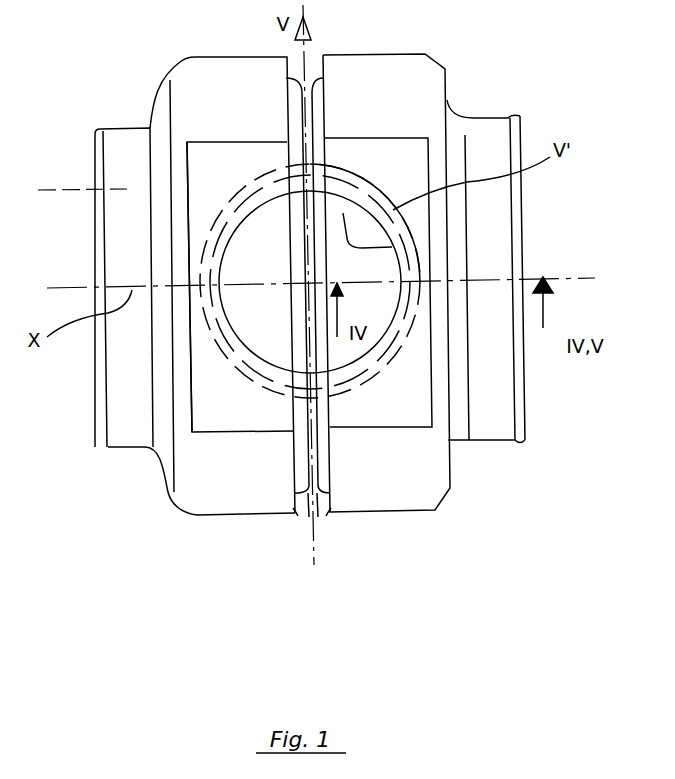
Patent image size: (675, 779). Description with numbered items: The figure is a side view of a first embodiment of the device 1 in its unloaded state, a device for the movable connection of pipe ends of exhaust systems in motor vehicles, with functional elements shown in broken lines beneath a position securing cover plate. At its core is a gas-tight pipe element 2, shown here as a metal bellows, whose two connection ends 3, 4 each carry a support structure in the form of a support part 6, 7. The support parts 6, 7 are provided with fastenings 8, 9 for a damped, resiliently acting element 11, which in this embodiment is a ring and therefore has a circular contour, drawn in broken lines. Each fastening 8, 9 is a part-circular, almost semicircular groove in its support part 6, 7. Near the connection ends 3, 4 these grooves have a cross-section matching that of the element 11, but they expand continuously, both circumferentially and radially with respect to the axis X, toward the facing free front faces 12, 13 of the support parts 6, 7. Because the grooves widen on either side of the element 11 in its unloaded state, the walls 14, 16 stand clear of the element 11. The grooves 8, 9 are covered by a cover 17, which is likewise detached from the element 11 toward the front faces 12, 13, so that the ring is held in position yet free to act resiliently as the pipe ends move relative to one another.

The device 1 is at (128, 496).
The pipe element 2 is at (318, 517).
The connection end 3 is at (95, 133).
The connection end 4 is at (520, 117).
The support part 6 is at (182, 77).
The support part 7 is at (441, 72).
The fastening 8 is at (247, 380).
The fastening 9 is at (377, 368).
The damped, resiliently acting element 11 is at (415, 270).
The front face 12 is at (298, 518).
The front face 13 is at (327, 517).
The wall 14 is at (367, 173).
The wall 16 is at (393, 247).
The cover 17 is at (230, 488).